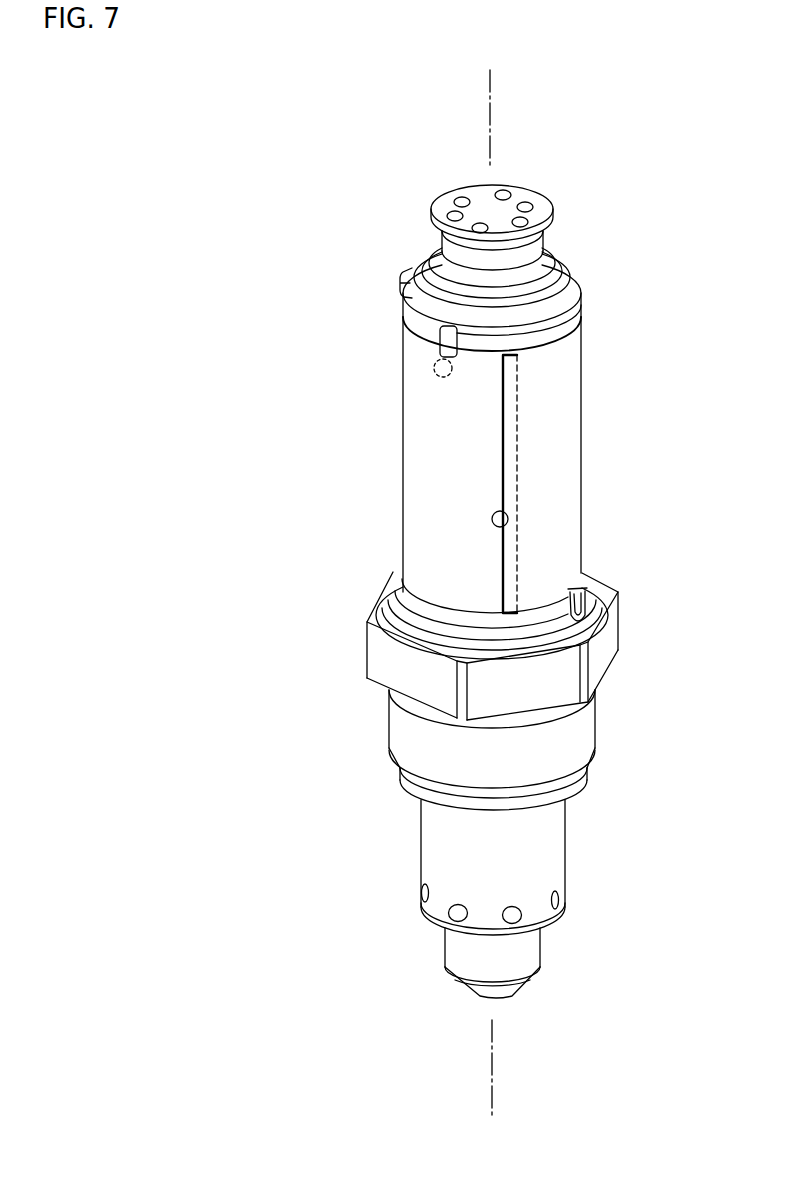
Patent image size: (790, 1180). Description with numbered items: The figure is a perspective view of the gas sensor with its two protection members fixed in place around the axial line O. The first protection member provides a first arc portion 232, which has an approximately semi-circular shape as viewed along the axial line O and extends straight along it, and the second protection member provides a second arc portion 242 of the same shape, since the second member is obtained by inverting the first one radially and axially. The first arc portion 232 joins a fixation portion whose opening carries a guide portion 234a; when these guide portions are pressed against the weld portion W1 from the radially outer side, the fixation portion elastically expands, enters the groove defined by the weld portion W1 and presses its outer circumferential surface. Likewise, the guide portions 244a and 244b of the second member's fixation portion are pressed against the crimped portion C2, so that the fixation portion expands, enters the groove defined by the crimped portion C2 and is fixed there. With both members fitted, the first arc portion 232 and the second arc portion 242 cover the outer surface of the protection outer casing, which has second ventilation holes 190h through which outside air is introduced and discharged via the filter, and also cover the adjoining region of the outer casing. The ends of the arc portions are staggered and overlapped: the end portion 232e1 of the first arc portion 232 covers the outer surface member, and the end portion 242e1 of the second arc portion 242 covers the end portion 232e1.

The guide portion 244a is at (400, 274).
The crimped portion C2 is at (412, 311).
The guide portion 244b is at (438, 352).
The second ventilation hole 190h is at (434, 375).
The first arc portion 232 is at (403, 441).
The second arc portion 242 is at (582, 404).
The end portion of first arc portion 232e1 is at (524, 462).
The end portion of second arc portion 242e1 is at (508, 520).
The weld portion W1 is at (580, 590).
The guide portion 234a is at (586, 608).
The axial line o is at (495, 1072).